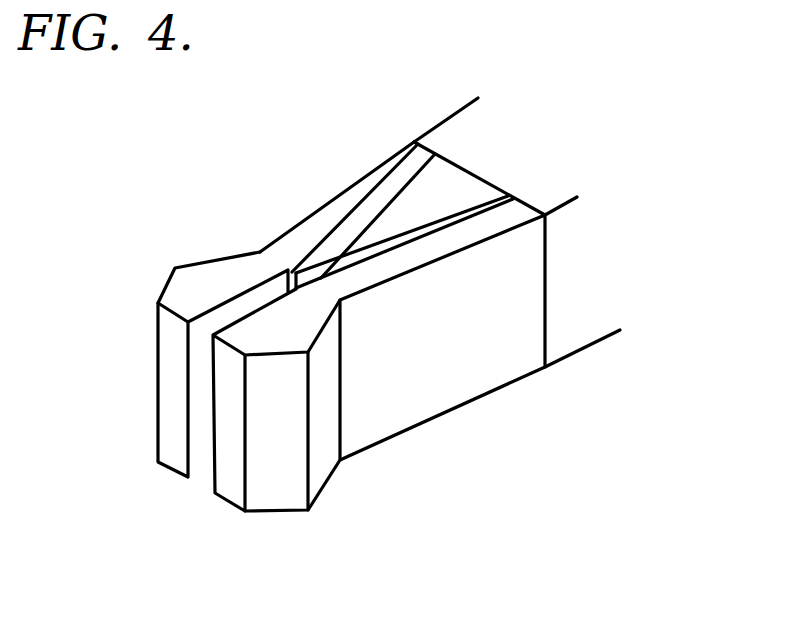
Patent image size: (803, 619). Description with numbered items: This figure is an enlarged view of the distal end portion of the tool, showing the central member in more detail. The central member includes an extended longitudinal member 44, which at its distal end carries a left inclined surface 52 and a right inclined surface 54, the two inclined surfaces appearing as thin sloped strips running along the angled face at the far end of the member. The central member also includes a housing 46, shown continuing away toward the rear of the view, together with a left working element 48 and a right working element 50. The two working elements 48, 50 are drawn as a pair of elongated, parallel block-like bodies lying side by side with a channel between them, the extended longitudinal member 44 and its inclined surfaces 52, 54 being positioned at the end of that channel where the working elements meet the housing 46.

The extended longitudinal member 44 is at (400, 218).
The housing 46 is at (510, 145).
The left working element 48 is at (263, 495).
The right working element 50 is at (185, 288).
The left inclined surface 52 is at (382, 255).
The right inclined surface 54 is at (333, 236).